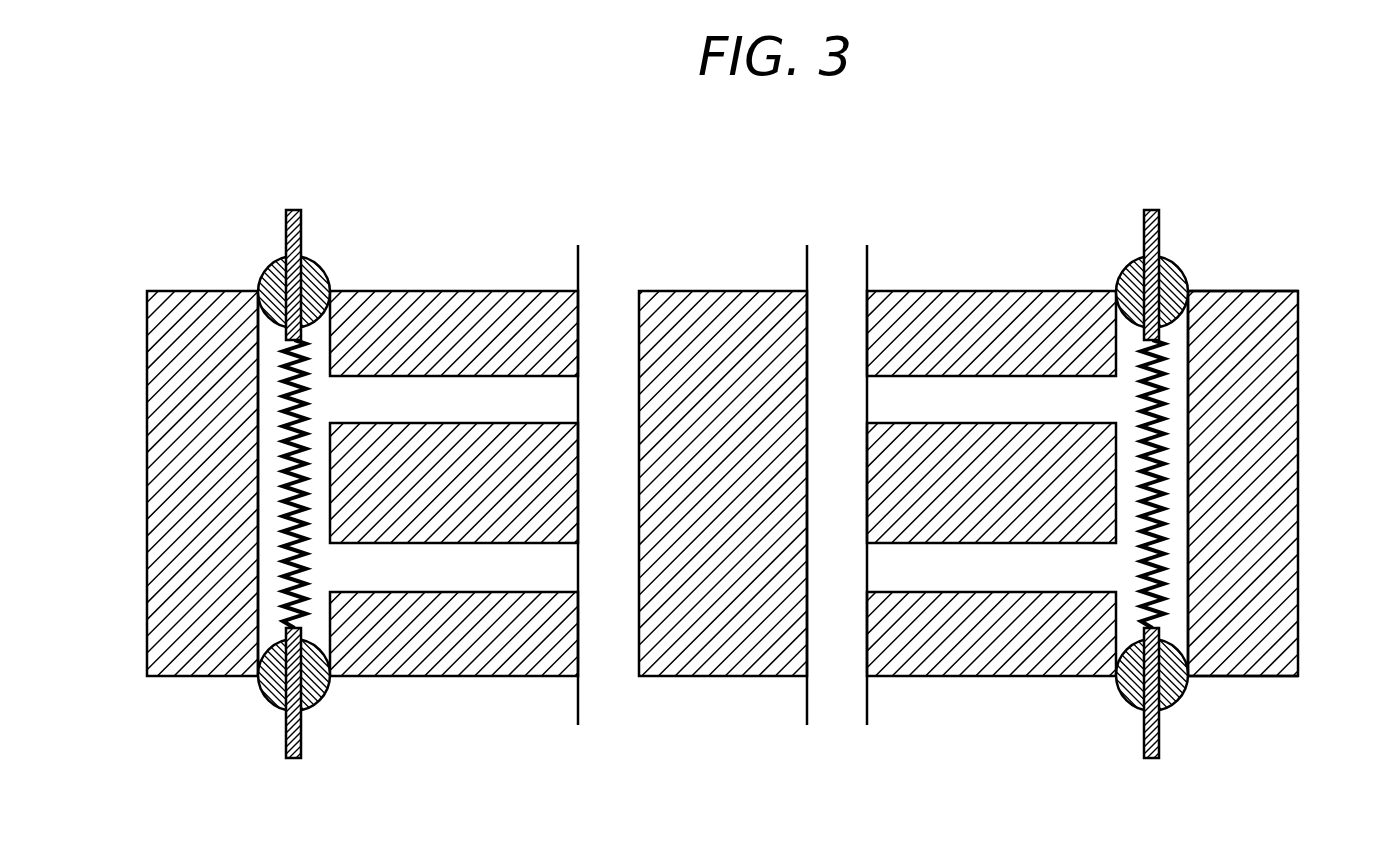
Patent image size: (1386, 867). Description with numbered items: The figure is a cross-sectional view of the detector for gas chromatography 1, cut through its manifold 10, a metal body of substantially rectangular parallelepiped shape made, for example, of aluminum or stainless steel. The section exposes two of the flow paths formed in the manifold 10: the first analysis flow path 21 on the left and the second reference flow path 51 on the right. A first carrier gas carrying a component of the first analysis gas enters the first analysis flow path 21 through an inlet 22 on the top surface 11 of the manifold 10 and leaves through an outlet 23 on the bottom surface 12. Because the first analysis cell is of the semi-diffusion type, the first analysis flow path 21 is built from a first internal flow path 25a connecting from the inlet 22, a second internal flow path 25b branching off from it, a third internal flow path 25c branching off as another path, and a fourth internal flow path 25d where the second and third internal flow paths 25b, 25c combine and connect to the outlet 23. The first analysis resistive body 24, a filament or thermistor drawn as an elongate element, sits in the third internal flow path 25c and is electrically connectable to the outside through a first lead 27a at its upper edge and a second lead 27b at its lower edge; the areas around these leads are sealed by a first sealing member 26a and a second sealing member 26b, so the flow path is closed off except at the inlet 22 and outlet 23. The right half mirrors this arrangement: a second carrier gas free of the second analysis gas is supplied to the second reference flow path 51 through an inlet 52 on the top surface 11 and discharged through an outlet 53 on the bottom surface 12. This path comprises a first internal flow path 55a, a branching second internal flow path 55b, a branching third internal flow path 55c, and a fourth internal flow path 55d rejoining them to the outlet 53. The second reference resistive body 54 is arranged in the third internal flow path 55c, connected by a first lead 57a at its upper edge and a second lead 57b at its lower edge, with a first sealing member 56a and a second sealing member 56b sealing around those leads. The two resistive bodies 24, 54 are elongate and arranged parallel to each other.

The detector for gas chromatography 1 is at (1213, 141).
The manifold 10 is at (1301, 383).
The top surface 11 is at (1242, 291).
The bottom surface 12 is at (1240, 677).
The first analysis flow path 21 is at (642, 262).
The inlet 22 is at (579, 260).
The outlet 23 is at (579, 708).
The first analysis resistive body 24 is at (288, 478).
The first internal flow path 25a is at (579, 330).
The second internal flow path 25b is at (579, 487).
The third internal flow path 25c is at (258, 413).
The fourth internal flow path 25d is at (579, 636).
The first sealing member 26a is at (262, 280).
The second sealing member 26b is at (258, 692).
The first lead 27a is at (286, 226).
The second lead 27b is at (286, 742).
The second reference flow path 51 is at (869, 262).
The inlet 52 is at (808, 260).
The outlet 53 is at (808, 708).
The second reference resistive body 54 is at (1157, 478).
The first internal flow path 55a is at (866, 330).
The second internal flow path 55b is at (866, 487).
The third internal flow path 55c is at (1188, 413).
The fourth internal flow path 55d is at (866, 636).
The first sealing member 56a is at (1120, 280).
The second sealing member 56b is at (1188, 692).
The first lead 57a is at (1160, 226).
The second lead 57b is at (1160, 742).